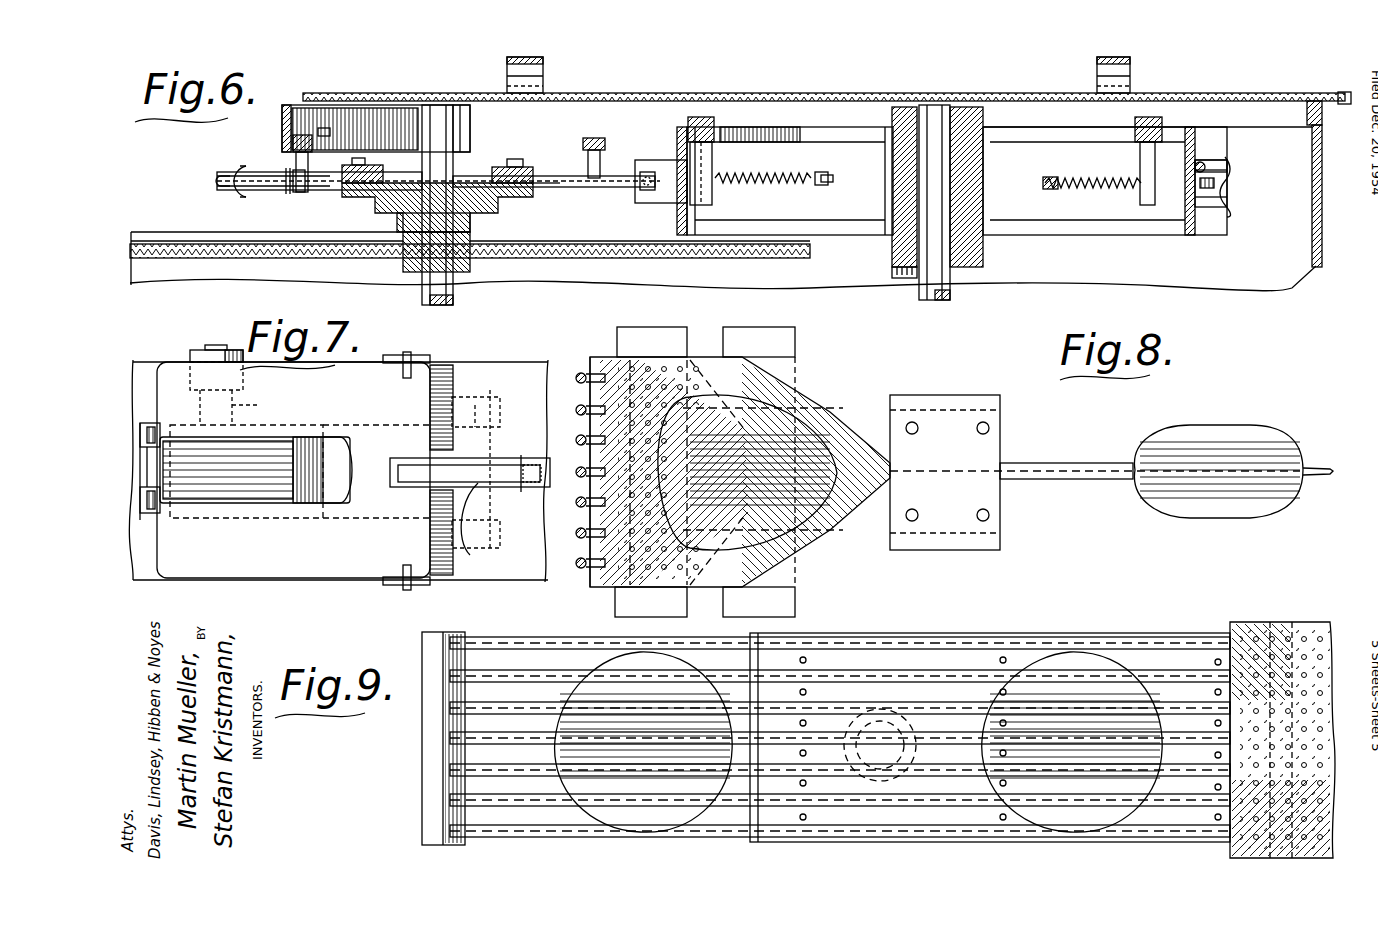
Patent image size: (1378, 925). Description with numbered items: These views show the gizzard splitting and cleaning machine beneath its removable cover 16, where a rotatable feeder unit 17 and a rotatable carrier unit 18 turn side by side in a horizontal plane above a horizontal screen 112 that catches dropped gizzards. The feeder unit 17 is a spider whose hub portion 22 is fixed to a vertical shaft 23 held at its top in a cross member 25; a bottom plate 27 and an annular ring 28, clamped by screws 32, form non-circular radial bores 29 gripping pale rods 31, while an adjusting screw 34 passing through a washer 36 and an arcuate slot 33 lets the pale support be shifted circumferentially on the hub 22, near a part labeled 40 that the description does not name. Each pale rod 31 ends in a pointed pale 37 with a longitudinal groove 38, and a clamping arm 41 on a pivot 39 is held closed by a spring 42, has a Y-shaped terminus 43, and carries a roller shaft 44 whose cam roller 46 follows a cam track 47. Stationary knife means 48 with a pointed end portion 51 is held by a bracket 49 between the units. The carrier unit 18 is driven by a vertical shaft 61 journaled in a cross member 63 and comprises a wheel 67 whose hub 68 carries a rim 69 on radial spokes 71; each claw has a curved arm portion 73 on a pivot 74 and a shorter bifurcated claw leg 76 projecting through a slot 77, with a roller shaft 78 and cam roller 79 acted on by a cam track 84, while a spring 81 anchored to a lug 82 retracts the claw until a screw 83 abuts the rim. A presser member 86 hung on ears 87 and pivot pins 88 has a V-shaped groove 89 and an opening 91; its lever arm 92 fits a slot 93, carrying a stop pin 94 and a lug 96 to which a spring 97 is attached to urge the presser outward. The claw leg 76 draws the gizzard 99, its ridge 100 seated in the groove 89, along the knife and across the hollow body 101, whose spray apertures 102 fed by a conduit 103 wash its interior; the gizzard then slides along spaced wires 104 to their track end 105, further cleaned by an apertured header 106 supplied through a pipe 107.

In FIG. 6, the removable cover 16 is at (787, 96).
In FIG. 6, the feeder or transfer unit 17 is at (235, 153).
In FIG. 6, the carrier unit 18 is at (884, 120).
In FIG. 6, the hub portion 22 is at (470, 218).
In FIG. 6, the vertical shaft 23 is at (455, 274).
In FIG. 6, the cross member 25 is at (403, 265).
In FIG. 6, the bottom plate 27 is at (520, 197).
In FIG. 6, the flat annular ring 28 is at (520, 166).
In FIG. 6, the radial bores 29 is at (345, 192).
In FIG. 6, the pale rods 31 is at (372, 195).
In FIG. 6, the screws 32 is at (345, 160).
In FIG. 6, the arcuate slot 33 is at (400, 214).
In FIG. 6, the adjusting screw 34 is at (470, 100).
In FIG. 6, the washer 36 is at (478, 130).
In FIG. 6, the pale 37 is at (225, 186).
In FIG. 6, the longitudinal groove 38 is at (233, 180).
In FIG. 6, the pivot 39 is at (548, 186).
In FIG. 6, the housing 40 is at (322, 140).
In FIG. 6, the clamping arm 41 is at (275, 192).
In FIG. 6, the spring 42 is at (288, 170).
In FIG. 6, the Y-shaped terminus 43 is at (262, 192).
In FIG. 6, the roller shaft 44 is at (596, 165).
In FIG. 6, the cam roller 46 is at (313, 158).
In FIG. 6, the cam track 47 is at (300, 135).
In FIG. 8, the knife means 48 is at (1082, 452).
In FIG. 8, the bracket 49 is at (683, 340).
In FIG. 8, the pointed end portion 51 is at (1322, 478).
In FIG. 6, the vertical shaft 61 is at (955, 288).
In FIG. 6, the cross member 63 is at (982, 127).
In FIG. 6, the wheel 67 is at (1137, 244).
In FIG. 6, the hub portion 68 is at (983, 205).
In FIG. 6, the rim portion 69 is at (1190, 236).
In FIG. 7, the rim portion 69 is at (518, 372).
In FIG. 6, the radial spokes 71 is at (842, 218).
In FIG. 7, the arm portion 73 is at (355, 424).
In FIG. 7, the pivot 74 is at (480, 397).
In FIG. 6, the claw leg 76 is at (635, 195).
In FIG. 7, the claw leg 76 is at (148, 515).
In FIG. 6, the elongated slot 77 is at (682, 127).
In FIG. 7, the elongated slot 77 is at (308, 510).
In FIG. 6, the roller shaft 78 is at (712, 170).
In FIG. 7, the roller shaft 78 is at (255, 404).
In FIG. 6, the cam roller 79 is at (716, 125).
In FIG. 7, the cam roller 79 is at (195, 352).
In FIG. 6, the spring 81 is at (760, 188).
In FIG. 6, the lug 82 is at (822, 183).
In FIG. 6, the screw 83 is at (1205, 165).
In FIG. 7, the screw 83 is at (146, 428).
In FIG. 6, the cam track 84 is at (780, 130).
In FIG. 6, the presser member 86 is at (1232, 196).
In FIG. 7, the presser member 86 is at (318, 578).
In FIG. 7, the ears 87 is at (425, 357).
In FIG. 7, the pivot pins 88 is at (406, 352).
In FIG. 6, the V-shaped groove 89 is at (1230, 187).
In FIG. 7, the V-shaped groove 89 is at (258, 485).
In FIG. 7, the opening 91 is at (343, 480).
In FIG. 7, the actuating lever arm 92 is at (497, 465).
In FIG. 7, the slot 93 is at (470, 555).
In FIG. 7, the stop pin 94 is at (535, 490).
In FIG. 7, the lug 96 is at (515, 482).
In FIG. 7, the spring 97 is at (536, 464).
In FIG. 8, the gizzard 99 is at (790, 402).
In FIG. 9, the gizzard 99 is at (690, 820).
In FIG. 8, the ridge 100 is at (1195, 490).
In FIG. 9, the ridge 100 is at (663, 750).
In FIG. 8, the hollow body 101 is at (805, 535).
In FIG. 9, the hollow body 101 is at (1315, 632).
In FIG. 8, the spray apertures 102 is at (680, 575).
In FIG. 9, the spray apertures 102 is at (1290, 650).
In FIG. 8, the conduit 103 is at (575, 465).
In FIG. 8, the wires 104 is at (580, 567).
In FIG. 9, the wires 104 is at (1175, 678).
In FIG. 9, the track end 105 is at (452, 634).
In FIG. 9, the apertured header 106 is at (940, 665).
In FIG. 9, the pipe 107 is at (916, 750).
In FIG. 6, the horizontal screen 112 is at (626, 258).